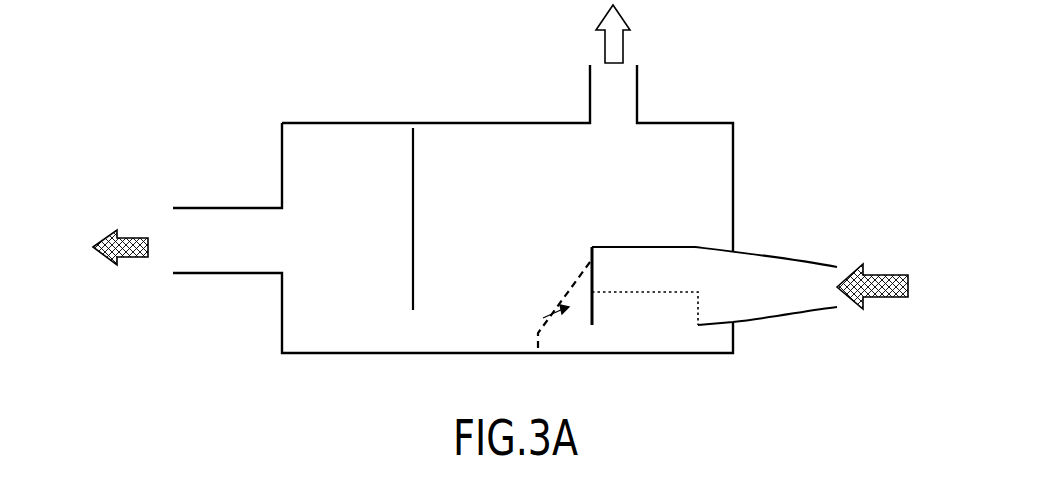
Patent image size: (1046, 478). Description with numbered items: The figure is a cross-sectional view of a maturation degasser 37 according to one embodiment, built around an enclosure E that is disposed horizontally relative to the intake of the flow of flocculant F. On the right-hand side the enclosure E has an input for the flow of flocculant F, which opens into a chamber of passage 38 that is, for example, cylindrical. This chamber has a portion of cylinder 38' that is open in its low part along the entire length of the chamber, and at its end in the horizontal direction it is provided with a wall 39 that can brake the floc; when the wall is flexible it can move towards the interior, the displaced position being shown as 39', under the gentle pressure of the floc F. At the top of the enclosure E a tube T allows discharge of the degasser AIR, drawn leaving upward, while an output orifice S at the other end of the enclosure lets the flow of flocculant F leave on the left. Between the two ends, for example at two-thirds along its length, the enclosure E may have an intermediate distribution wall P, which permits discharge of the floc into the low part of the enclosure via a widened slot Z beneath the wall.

The maturation degasser 37 is at (305, 108).
The chamber of passage 38 is at (714, 209).
The portion of cylinder 38' is at (645, 345).
The wall 39 is at (570, 322).
The wall moved towards the interior 39' is at (544, 326).
The intermediate distribution wall P is at (414, 180).
The enclosure E is at (282, 165).
The output orifice S is at (243, 275).
The widened slot Z is at (401, 338).
The tube for discharge of the degasser air T is at (639, 86).
The flow of flocculant F is at (131, 237).
The degasser air AIR is at (636, 34).